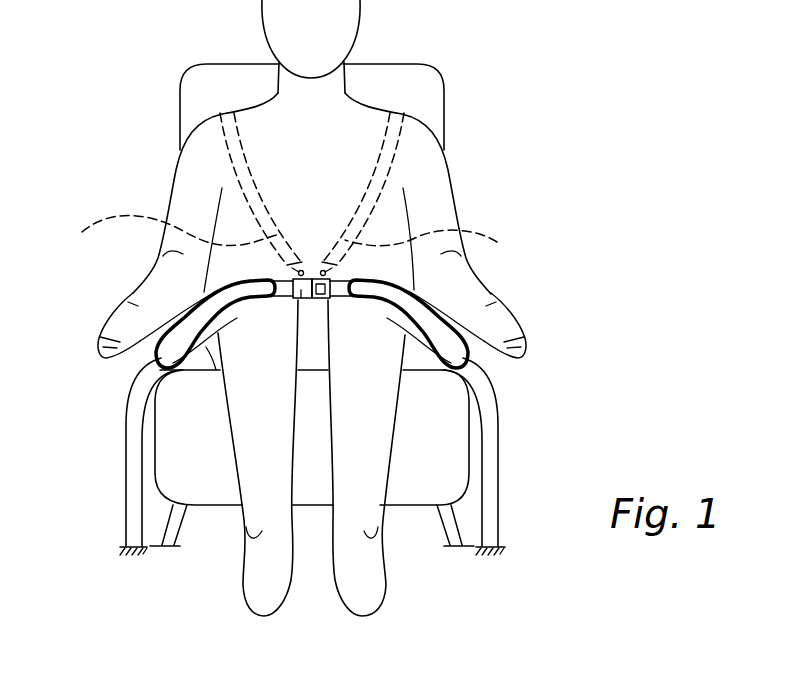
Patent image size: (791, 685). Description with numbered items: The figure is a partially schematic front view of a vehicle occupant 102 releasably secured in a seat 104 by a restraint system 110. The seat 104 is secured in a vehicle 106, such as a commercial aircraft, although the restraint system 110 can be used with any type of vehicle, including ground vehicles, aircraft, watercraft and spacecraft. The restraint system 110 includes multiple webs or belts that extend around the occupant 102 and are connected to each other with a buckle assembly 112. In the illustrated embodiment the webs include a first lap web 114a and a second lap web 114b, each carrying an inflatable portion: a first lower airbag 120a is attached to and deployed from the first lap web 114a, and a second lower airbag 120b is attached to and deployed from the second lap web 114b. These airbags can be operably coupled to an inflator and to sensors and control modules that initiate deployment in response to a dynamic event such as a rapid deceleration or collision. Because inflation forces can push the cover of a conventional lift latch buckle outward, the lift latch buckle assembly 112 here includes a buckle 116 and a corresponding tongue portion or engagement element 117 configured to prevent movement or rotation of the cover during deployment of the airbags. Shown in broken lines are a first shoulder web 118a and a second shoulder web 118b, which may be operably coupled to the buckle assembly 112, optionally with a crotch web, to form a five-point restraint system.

The vehicle occupant 102 is at (251, 602).
The seat 104 is at (414, 488).
The vehicle 106 is at (443, 630).
The restraint system 110 is at (134, 131).
The buckle assembly 112 is at (311, 308).
The first lap web 114a is at (490, 437).
The second lap web 114b is at (135, 462).
The buckle 116 is at (329, 299).
The tongue portion 117 is at (300, 299).
The first shoulder web 118a is at (444, 242).
The second shoulder web 118b is at (158, 230).
The first lower airbag 120a is at (422, 305).
The second lower airbag 120b is at (216, 295).